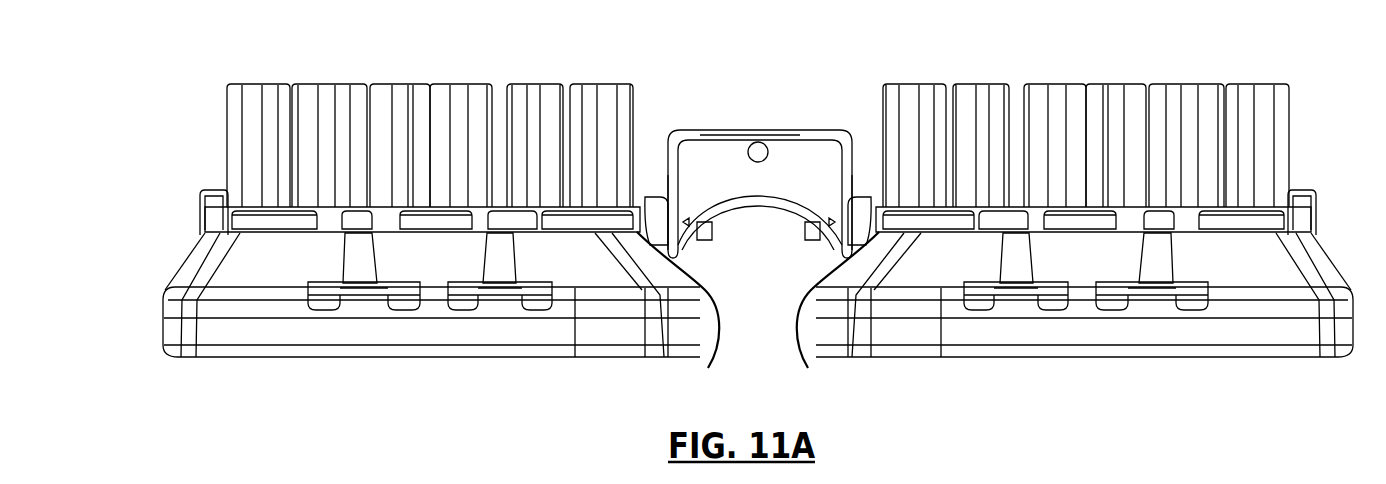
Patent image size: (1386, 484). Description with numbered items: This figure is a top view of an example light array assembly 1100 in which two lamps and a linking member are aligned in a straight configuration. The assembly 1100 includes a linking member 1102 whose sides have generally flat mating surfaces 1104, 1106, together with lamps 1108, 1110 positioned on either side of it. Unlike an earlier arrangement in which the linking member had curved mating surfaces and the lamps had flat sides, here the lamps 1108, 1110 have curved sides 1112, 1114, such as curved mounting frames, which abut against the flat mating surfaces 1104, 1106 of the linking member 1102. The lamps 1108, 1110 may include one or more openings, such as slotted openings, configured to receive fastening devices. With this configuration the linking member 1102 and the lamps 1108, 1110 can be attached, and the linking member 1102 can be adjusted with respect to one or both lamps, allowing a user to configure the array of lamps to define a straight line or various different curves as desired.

The light array assembly 1100 is at (266, 51).
The linking member 1102 is at (758, 82).
The flat mating surface 1104 is at (665, 185).
The flat mating surface 1106 is at (848, 185).
The lamp 1108 is at (465, 368).
The lamp 1110 is at (1010, 377).
The curved side 1112 is at (700, 364).
The curved side 1114 is at (816, 364).